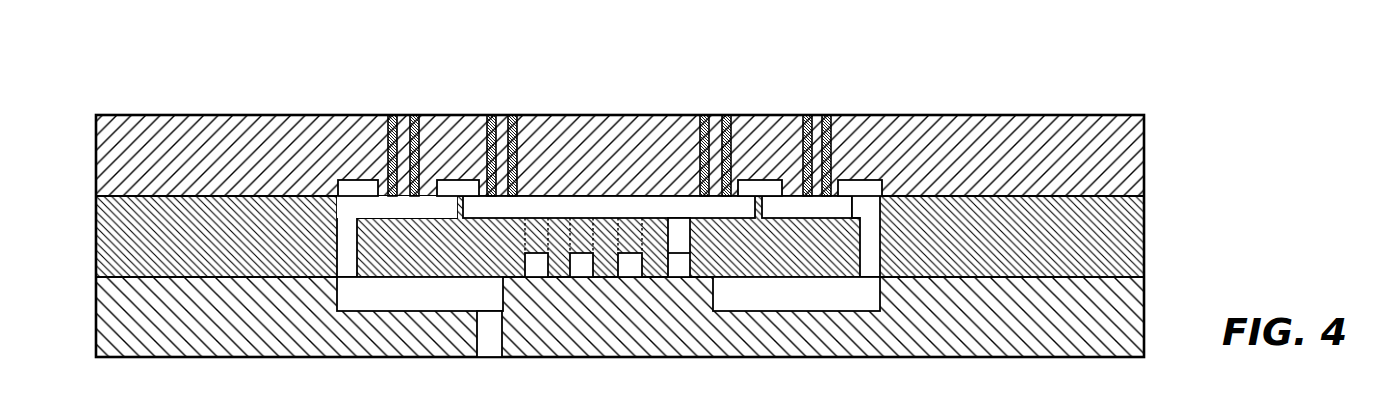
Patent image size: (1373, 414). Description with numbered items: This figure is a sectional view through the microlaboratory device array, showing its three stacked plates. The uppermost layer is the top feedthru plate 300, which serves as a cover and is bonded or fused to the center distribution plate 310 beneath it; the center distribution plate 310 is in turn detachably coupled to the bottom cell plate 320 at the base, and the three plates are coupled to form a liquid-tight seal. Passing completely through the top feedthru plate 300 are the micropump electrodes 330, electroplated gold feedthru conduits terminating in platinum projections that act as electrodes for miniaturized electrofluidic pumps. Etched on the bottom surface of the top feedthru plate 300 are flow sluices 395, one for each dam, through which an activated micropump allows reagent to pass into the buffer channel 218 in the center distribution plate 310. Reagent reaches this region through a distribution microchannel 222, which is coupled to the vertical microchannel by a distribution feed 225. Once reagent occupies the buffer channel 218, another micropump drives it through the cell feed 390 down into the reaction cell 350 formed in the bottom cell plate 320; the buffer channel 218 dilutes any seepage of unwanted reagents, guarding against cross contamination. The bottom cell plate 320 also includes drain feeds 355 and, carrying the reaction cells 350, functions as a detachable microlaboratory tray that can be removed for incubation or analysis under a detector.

The top feedthru plate 300 is at (97, 166).
The center distribution plate 310 is at (97, 241).
The bottom cell plate 320 is at (97, 328).
The micropump electrodes 330 is at (414, 116).
The buffer channel 218 is at (430, 205).
The flow sluice 395 is at (360, 180).
The cell feed 390 is at (337, 223).
The distribution microchannel 222 is at (628, 207).
The distribution feed 225 is at (690, 240).
The reaction cell 350 is at (362, 305).
The drain feed 355 is at (481, 353).